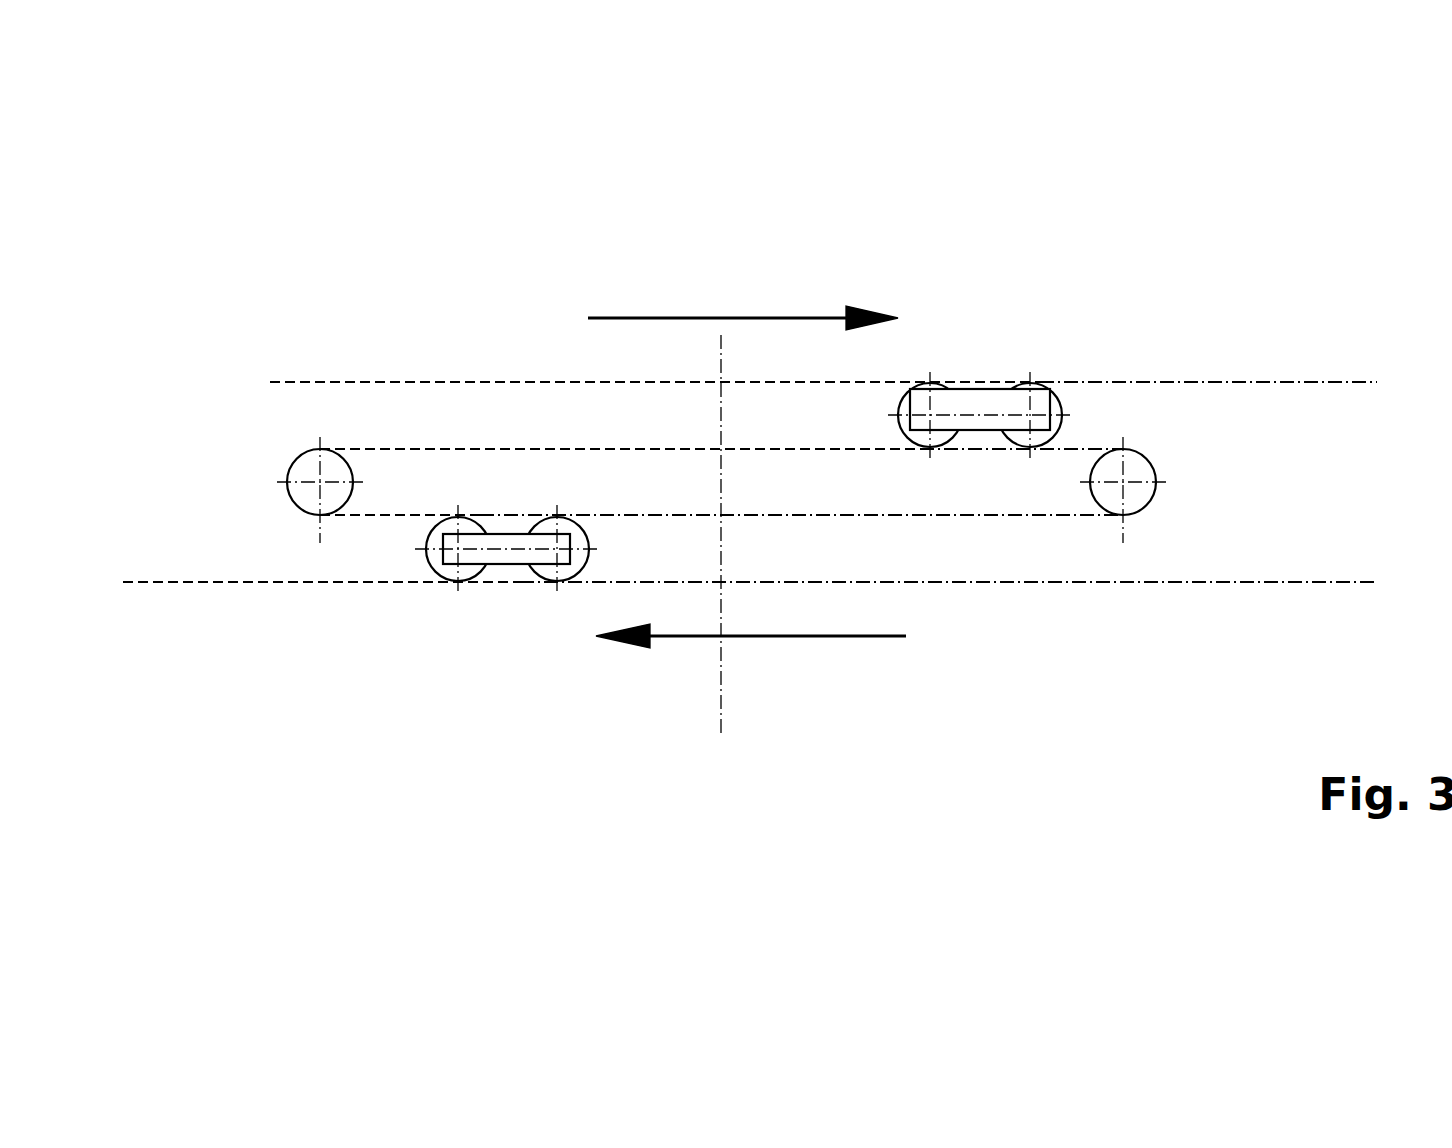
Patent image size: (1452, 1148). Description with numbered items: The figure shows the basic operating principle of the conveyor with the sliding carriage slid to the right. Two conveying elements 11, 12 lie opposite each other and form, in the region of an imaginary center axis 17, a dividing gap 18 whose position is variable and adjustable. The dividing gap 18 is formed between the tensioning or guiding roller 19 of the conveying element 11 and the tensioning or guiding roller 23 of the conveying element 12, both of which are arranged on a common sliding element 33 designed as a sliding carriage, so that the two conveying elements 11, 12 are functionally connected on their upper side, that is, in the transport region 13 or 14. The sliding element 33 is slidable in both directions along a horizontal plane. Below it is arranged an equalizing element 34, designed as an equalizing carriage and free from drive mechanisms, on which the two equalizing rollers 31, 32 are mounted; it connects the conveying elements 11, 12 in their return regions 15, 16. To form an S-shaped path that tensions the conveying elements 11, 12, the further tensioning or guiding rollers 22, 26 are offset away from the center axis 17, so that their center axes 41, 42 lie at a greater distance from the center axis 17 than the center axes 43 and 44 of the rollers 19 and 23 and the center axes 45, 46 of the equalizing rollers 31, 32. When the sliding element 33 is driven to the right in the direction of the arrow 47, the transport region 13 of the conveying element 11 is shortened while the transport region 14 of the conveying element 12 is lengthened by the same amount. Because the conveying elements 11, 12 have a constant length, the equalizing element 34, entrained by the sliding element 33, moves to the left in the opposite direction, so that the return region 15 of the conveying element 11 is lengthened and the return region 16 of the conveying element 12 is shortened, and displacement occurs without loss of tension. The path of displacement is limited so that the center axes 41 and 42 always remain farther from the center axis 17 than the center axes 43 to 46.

The conveying element 11 is at (1237, 350).
The conveying element 12 is at (412, 360).
The transport region 13 is at (1170, 382).
The transport region 14 is at (512, 382).
The return region 15 is at (1160, 582).
The return region 16 is at (218, 582).
The center axis 17 is at (721, 725).
The dividing gap 18 is at (1008, 441).
The tensioning or guiding roller 19 is at (1065, 395).
The tensioning or guiding roller 22 is at (1143, 470).
The tensioning or guiding roller 23 is at (897, 395).
The tensioning or guiding roller 26 is at (300, 470).
The equalizing roller 31 is at (545, 568).
The equalizing roller 32 is at (430, 565).
The sliding element 33 is at (993, 395).
The equalizing element 34 is at (500, 565).
The center axis 41 is at (1123, 545).
The center axis 42 is at (313, 447).
The center axis 43 is at (1030, 458).
The center axis 44 is at (935, 385).
The center axis 45 is at (557, 598).
The center axis 46 is at (458, 598).
The arrow 47 is at (670, 318).